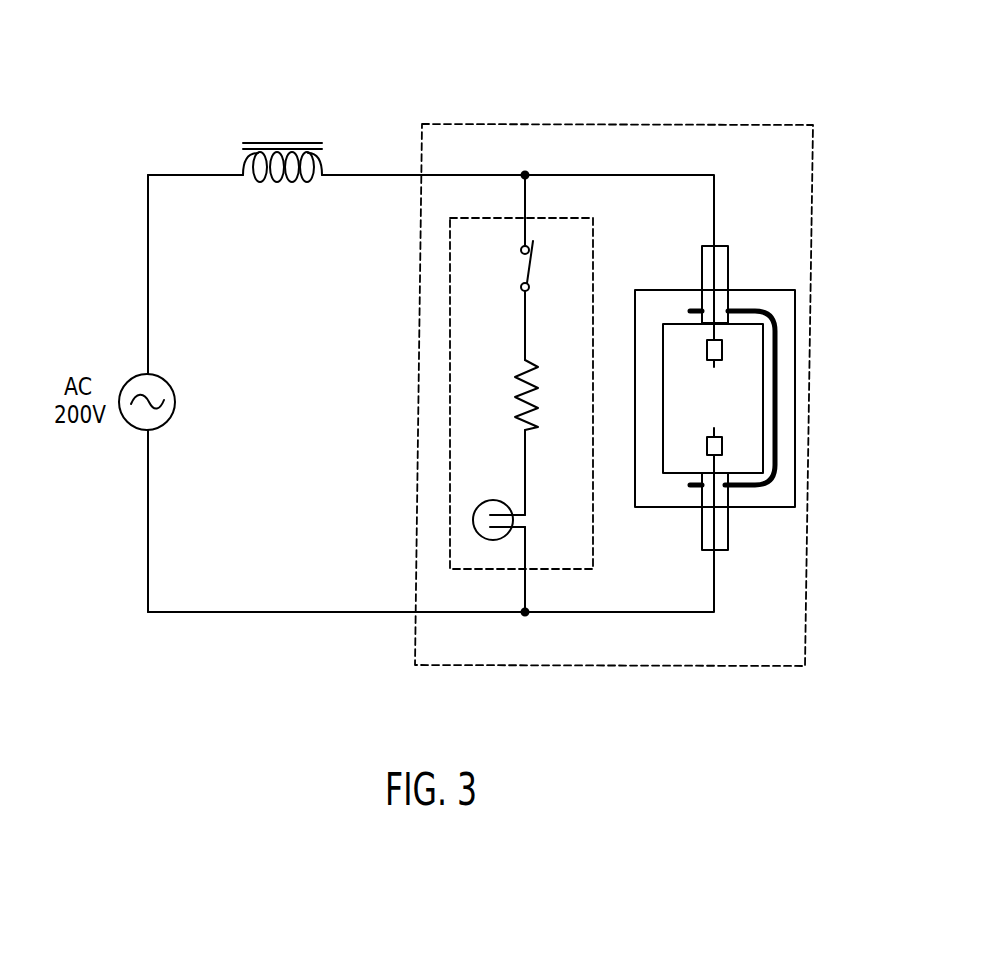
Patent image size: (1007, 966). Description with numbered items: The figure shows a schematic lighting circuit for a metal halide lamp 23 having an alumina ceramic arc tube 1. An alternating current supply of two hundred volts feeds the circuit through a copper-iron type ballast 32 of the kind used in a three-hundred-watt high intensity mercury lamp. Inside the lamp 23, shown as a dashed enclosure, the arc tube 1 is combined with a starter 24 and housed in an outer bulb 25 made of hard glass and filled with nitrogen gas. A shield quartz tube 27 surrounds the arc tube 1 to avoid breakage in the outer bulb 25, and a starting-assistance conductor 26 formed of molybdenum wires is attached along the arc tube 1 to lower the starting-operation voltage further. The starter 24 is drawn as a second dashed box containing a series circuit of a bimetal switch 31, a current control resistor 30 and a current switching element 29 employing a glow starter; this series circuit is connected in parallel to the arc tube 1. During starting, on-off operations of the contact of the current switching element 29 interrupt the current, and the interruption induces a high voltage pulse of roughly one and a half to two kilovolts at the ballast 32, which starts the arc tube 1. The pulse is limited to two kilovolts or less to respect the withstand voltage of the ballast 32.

The arc tube 1 is at (770, 443).
The lamp 23 is at (587, 108).
The starter 24 is at (450, 435).
The outer bulb 25 is at (743, 124).
The starting-assistance conductor 26 is at (775, 403).
The shield quartz tube 27 is at (795, 345).
The current switching element 29 is at (473, 517).
The current control resistor 30 is at (515, 386).
The bimetal switch 31 is at (525, 272).
The ballast 32 is at (282, 143).